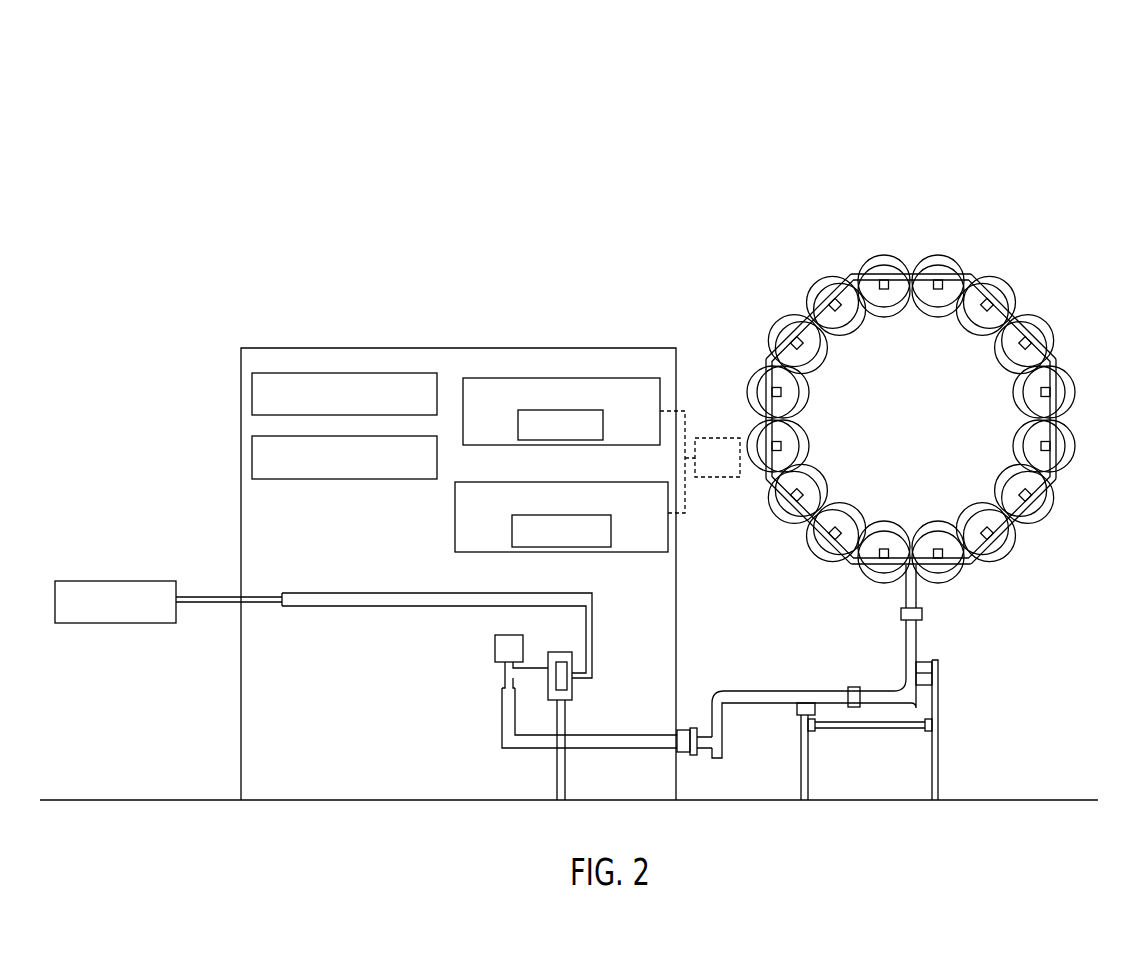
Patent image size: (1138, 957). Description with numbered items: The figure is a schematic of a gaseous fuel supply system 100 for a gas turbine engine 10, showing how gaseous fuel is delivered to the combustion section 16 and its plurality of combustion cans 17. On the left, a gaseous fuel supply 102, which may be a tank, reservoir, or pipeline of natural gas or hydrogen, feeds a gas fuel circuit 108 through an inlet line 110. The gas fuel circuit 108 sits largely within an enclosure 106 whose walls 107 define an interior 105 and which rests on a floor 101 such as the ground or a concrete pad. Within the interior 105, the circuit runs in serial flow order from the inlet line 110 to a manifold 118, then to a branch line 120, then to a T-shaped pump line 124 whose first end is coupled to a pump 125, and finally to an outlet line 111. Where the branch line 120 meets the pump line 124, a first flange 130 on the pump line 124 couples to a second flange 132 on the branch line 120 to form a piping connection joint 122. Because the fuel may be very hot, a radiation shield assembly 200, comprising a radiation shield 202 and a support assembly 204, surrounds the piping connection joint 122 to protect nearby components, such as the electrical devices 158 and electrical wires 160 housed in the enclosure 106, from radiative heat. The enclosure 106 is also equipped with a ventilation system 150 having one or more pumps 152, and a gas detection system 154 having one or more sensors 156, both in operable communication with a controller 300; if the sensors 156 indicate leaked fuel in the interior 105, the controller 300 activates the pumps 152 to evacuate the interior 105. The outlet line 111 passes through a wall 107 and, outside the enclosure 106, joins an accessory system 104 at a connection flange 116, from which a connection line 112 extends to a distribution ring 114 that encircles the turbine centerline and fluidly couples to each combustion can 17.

The gaseous fuel supply system 100 is at (1041, 90).
The gas turbine engine 10 is at (1043, 217).
The combustion section 16 is at (923, 412).
The combustion can 17 is at (884, 298).
The distribution ring 114 is at (1037, 527).
The accessory system 104 is at (1006, 640).
The floor 101 is at (1022, 800).
The gaseous fuel supply 102 is at (80, 581).
The interior 105 is at (287, 692).
The enclosure 106 is at (437, 539).
The wall 107 is at (373, 347).
The gas fuel circuit 108 is at (392, 676).
The inlet line 110 is at (200, 597).
The outlet line 111 is at (502, 722).
The connection line 112 is at (733, 698).
The connection flange 116 is at (693, 752).
The manifold 118 is at (345, 598).
The branch line 120 is at (592, 652).
The piping connection joint 122 is at (589, 630).
The pump line 124 is at (505, 678).
The pump 125 is at (495, 648).
The first flange 130 is at (550, 678).
The second flange 132 is at (567, 678).
The ventilation system 150 is at (561, 391).
The pump 152 is at (603, 425).
The gas detection system 154 is at (523, 534).
The sensor 156 is at (611, 530).
The electrical devices 158 is at (250, 395).
The electrical wires 160 is at (250, 462).
The radiation shield assembly 200 is at (566, 644).
The radiation shield 202 is at (570, 698).
The support assembly 204 is at (557, 773).
The controller 300 is at (703, 473).